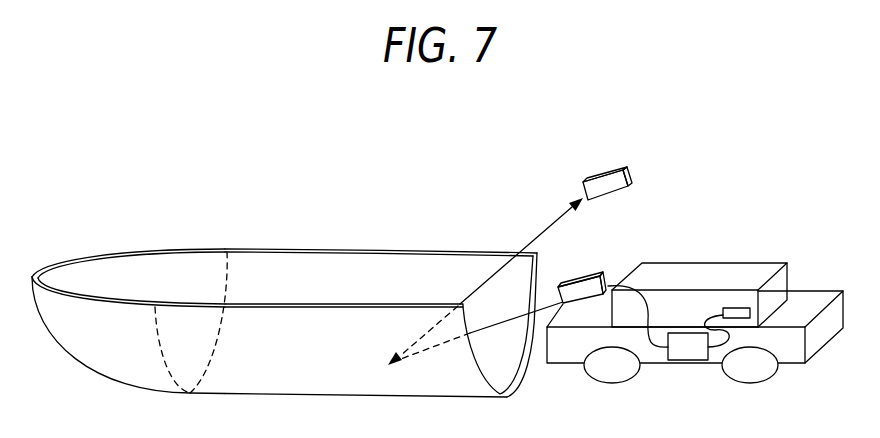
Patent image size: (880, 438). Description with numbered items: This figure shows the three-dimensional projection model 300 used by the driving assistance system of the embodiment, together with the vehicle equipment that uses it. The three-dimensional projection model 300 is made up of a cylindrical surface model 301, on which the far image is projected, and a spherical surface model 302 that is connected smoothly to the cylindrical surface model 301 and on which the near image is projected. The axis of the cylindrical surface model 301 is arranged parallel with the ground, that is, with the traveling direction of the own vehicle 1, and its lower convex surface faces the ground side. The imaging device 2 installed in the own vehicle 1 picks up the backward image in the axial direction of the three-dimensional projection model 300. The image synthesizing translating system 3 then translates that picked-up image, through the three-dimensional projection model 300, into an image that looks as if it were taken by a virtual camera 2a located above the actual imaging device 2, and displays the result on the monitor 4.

The own vehicle 1 is at (822, 301).
The imaging device 2 is at (593, 275).
The virtual camera 2a is at (628, 171).
The image synthesizing translating system 3 is at (686, 358).
The monitor 4 is at (737, 307).
The three-dimensional projection model 300 is at (290, 182).
The cylindrical surface model 301 is at (255, 250).
The spherical surface model 302 is at (183, 250).